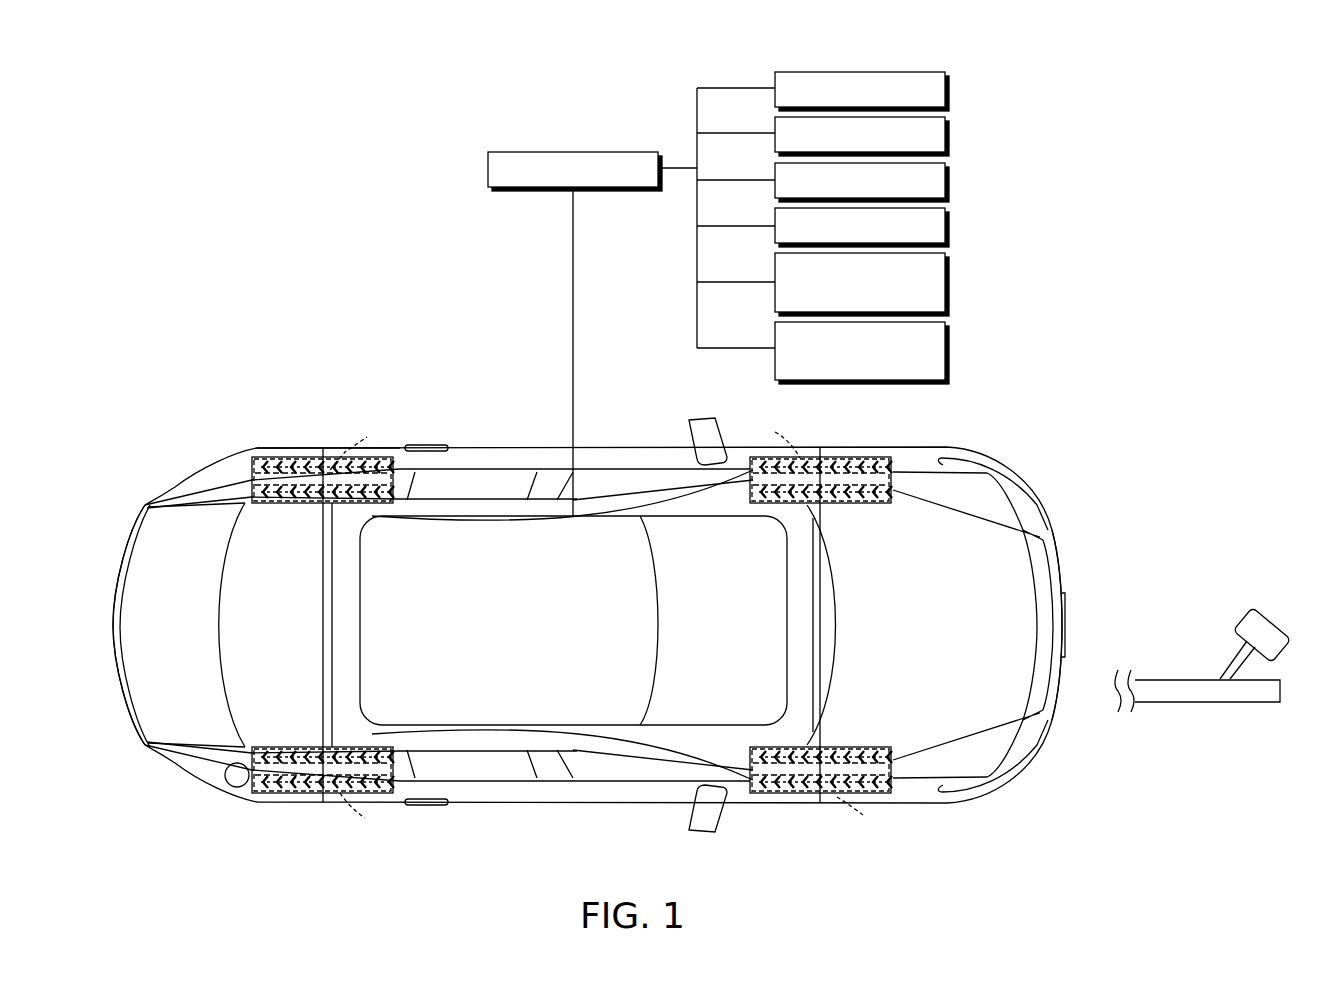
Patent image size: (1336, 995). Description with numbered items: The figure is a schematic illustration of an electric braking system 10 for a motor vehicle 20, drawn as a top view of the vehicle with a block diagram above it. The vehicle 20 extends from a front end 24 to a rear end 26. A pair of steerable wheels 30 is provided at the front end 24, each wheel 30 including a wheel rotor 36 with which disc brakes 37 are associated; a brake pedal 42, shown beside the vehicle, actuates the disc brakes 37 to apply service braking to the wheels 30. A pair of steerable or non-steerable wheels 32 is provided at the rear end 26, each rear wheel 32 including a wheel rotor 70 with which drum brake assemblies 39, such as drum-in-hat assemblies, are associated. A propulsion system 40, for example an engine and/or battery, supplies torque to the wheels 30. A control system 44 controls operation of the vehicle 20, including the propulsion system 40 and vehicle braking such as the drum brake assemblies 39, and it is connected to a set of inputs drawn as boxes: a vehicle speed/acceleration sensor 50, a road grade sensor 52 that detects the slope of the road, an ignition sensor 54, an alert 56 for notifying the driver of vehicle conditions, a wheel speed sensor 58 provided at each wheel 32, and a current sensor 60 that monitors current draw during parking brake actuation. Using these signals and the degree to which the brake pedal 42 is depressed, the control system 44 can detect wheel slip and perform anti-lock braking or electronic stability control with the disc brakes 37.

The electric braking system 10 is at (252, 378).
The motor vehicle 20 is at (492, 840).
The front end 24 is at (1010, 456).
The rear end 26 is at (210, 452).
The steerable wheels 30 is at (852, 460).
The rear wheels 32 is at (280, 460).
The wheel rotor 36 is at (812, 625).
The disc brakes 37 is at (812, 625).
The drum brake assemblies 39 is at (384, 626).
The wheel rotor 70 is at (384, 626).
The propulsion system 40 is at (592, 634).
The brake pedal 42 is at (1208, 703).
The control system 44 is at (488, 168).
The vehicle speed/acceleration sensor 50 is at (949, 92).
The road grade sensor 52 is at (949, 137).
The ignition sensor 54 is at (949, 182).
The alert 56 is at (949, 227).
The wheel speed sensor 58 is at (949, 284).
The current sensor 60 is at (949, 352).